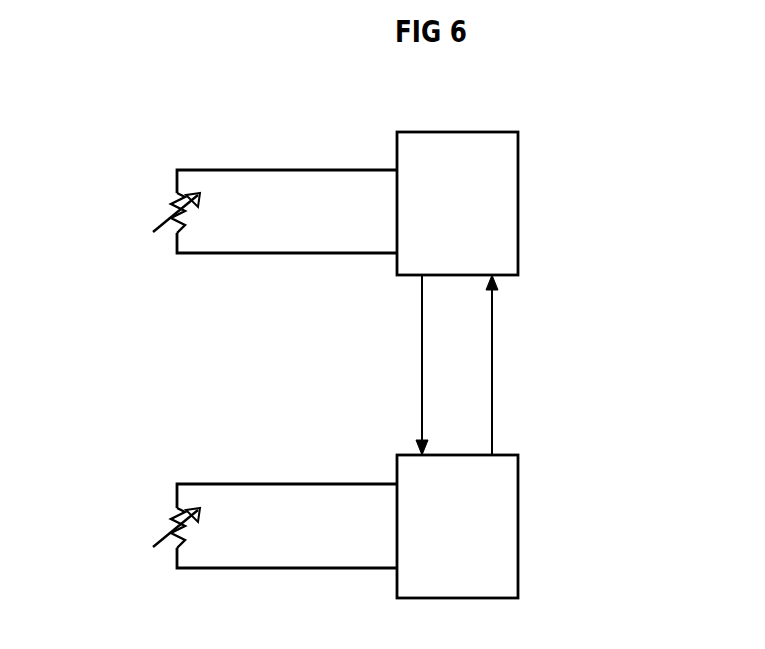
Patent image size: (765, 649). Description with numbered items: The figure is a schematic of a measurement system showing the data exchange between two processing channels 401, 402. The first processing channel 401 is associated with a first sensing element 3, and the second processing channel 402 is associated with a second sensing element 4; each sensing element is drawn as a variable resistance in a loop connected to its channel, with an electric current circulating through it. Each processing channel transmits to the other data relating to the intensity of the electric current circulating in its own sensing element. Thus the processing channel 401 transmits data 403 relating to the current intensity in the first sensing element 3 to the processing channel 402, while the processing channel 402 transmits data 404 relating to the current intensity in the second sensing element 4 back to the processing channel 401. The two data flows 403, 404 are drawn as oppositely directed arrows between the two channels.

The first sensing element 3 is at (131, 218).
The second sensing element 4 is at (146, 521).
The processing channel 401 is at (518, 202).
The processing channel 402 is at (518, 525).
The data 403 is at (422, 322).
The data 404 is at (492, 337).